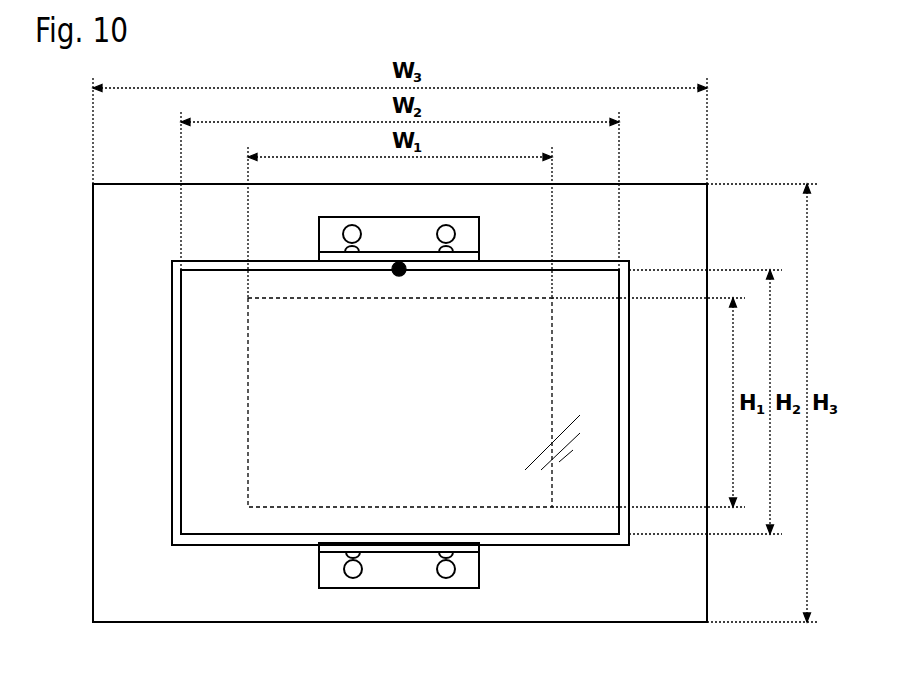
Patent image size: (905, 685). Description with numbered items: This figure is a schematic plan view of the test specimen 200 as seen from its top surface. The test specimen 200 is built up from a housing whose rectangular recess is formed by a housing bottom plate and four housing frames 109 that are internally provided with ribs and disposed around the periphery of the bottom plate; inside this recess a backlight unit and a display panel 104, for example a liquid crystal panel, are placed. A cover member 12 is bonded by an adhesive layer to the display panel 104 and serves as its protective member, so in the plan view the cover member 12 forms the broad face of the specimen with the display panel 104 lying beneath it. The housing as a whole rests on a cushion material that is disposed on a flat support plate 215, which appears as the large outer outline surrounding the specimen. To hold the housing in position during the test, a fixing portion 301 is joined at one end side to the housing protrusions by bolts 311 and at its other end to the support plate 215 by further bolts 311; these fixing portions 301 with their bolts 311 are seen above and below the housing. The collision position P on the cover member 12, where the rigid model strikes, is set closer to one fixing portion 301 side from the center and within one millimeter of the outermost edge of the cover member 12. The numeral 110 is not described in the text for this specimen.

The test specimen 200 is at (753, 104).
The support plate 215 is at (136, 317).
The frame 110 is at (175, 438).
The cover member 12 is at (210, 385).
The housing frame 109 is at (220, 313).
The display panel 104 is at (250, 481).
The fixing portion 301 is at (472, 565).
The bolt 311 is at (342, 583).
The collision position P is at (400, 277).